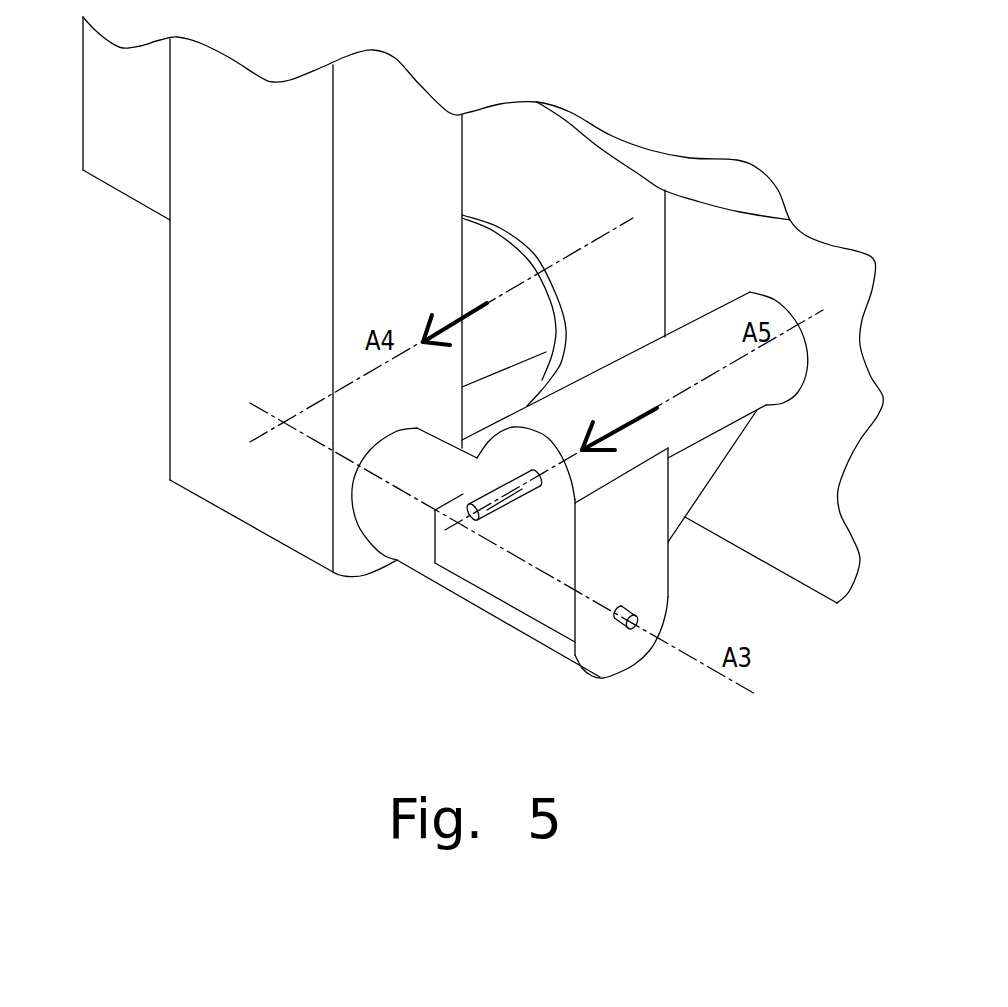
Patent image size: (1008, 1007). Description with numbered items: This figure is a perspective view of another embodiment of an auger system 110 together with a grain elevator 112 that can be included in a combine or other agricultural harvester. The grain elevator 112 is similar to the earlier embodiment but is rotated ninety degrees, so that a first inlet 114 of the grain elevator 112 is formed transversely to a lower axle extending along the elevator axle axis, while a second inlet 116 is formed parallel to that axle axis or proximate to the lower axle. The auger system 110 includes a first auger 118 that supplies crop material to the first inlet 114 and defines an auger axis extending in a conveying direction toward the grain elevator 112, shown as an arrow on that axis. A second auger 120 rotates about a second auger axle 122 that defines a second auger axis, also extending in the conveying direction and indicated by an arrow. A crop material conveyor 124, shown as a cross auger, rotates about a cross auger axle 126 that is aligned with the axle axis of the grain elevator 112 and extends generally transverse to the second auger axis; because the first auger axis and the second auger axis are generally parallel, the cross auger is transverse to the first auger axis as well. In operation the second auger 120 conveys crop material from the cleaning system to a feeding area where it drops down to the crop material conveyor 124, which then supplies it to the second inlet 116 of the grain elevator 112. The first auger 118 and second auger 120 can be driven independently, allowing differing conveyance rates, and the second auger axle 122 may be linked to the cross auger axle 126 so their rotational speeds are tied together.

The auger system 110 is at (645, 315).
The grain elevator 112 is at (150, 437).
The first inlet 114 is at (537, 358).
The second inlet 116 is at (363, 527).
The first auger 118 is at (520, 316).
The second auger 120 is at (745, 385).
The second auger axle 122 is at (490, 515).
The crop material conveyor 124 is at (420, 553).
The cross auger axle 126 is at (630, 614).